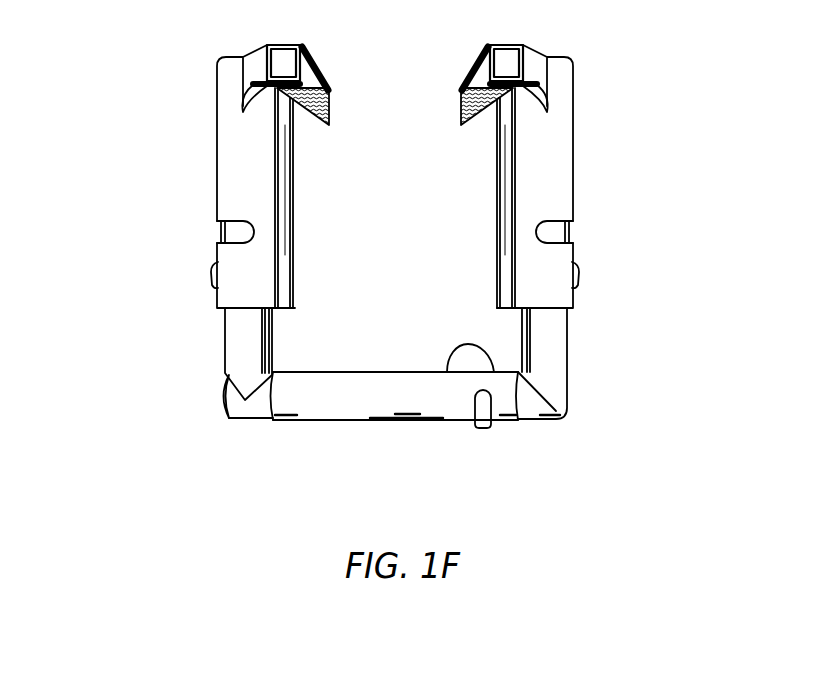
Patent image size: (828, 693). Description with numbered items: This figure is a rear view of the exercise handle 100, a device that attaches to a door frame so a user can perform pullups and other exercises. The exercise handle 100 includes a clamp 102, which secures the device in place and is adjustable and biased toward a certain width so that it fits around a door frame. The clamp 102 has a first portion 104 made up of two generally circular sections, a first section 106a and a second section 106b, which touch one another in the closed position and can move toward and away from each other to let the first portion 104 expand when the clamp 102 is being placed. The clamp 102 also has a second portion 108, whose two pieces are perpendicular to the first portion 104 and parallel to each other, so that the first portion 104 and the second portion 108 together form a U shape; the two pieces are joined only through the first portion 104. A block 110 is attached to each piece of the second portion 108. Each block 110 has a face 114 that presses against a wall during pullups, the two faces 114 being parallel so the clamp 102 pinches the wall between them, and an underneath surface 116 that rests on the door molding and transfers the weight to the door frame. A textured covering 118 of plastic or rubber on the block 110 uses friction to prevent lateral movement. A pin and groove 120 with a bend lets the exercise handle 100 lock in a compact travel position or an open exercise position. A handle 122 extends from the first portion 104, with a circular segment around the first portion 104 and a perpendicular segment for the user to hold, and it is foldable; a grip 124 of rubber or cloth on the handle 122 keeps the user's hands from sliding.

The exercise handle 100 is at (108, 56).
The clamp 102 is at (585, 357).
The first portion 104 is at (216, 395).
The first section 106a is at (240, 413).
The second section 106b is at (567, 410).
The second portion 108 is at (233, 333).
The block 110 is at (547, 185).
The face 114 is at (331, 90).
The underneath surface 116 is at (500, 115).
The textured covering 118 is at (280, 58).
The pin and groove 120 is at (553, 231).
The handle 122 is at (340, 374).
The grip 124 is at (453, 347).